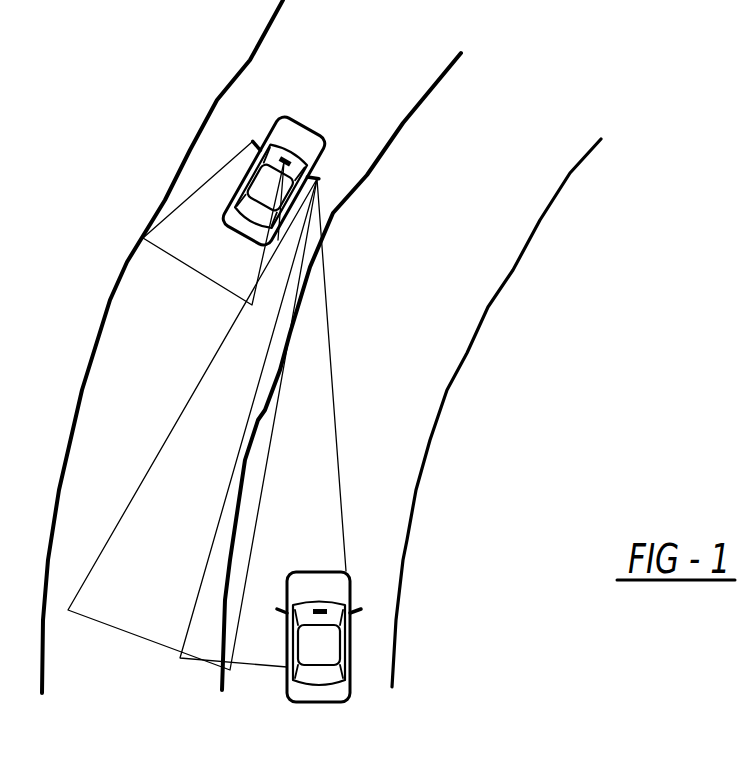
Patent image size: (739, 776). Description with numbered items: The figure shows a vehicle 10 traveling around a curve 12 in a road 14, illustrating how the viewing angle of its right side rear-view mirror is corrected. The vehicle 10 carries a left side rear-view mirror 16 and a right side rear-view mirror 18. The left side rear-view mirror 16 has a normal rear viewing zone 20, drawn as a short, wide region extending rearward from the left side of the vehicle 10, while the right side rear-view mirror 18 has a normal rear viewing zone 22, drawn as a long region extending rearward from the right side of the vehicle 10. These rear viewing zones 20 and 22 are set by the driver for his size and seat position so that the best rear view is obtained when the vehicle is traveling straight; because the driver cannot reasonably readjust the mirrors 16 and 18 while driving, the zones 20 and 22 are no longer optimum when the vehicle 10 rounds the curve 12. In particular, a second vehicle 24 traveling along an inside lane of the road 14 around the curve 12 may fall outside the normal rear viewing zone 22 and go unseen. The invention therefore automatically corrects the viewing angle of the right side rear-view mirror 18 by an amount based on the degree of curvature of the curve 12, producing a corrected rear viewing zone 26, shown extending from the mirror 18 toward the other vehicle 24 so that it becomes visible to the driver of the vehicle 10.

The vehicle 10 is at (303, 108).
The curve 12 is at (488, 307).
The road 14 is at (502, 209).
The left side rear-view mirror 16 is at (251, 140).
The right side rear-view mirror 18 is at (320, 178).
The normal rear viewing zone 20 is at (155, 252).
The normal rear viewing zone 22 is at (173, 423).
The vehicle 24 is at (338, 588).
The corrected rear viewing zone 26 is at (338, 473).